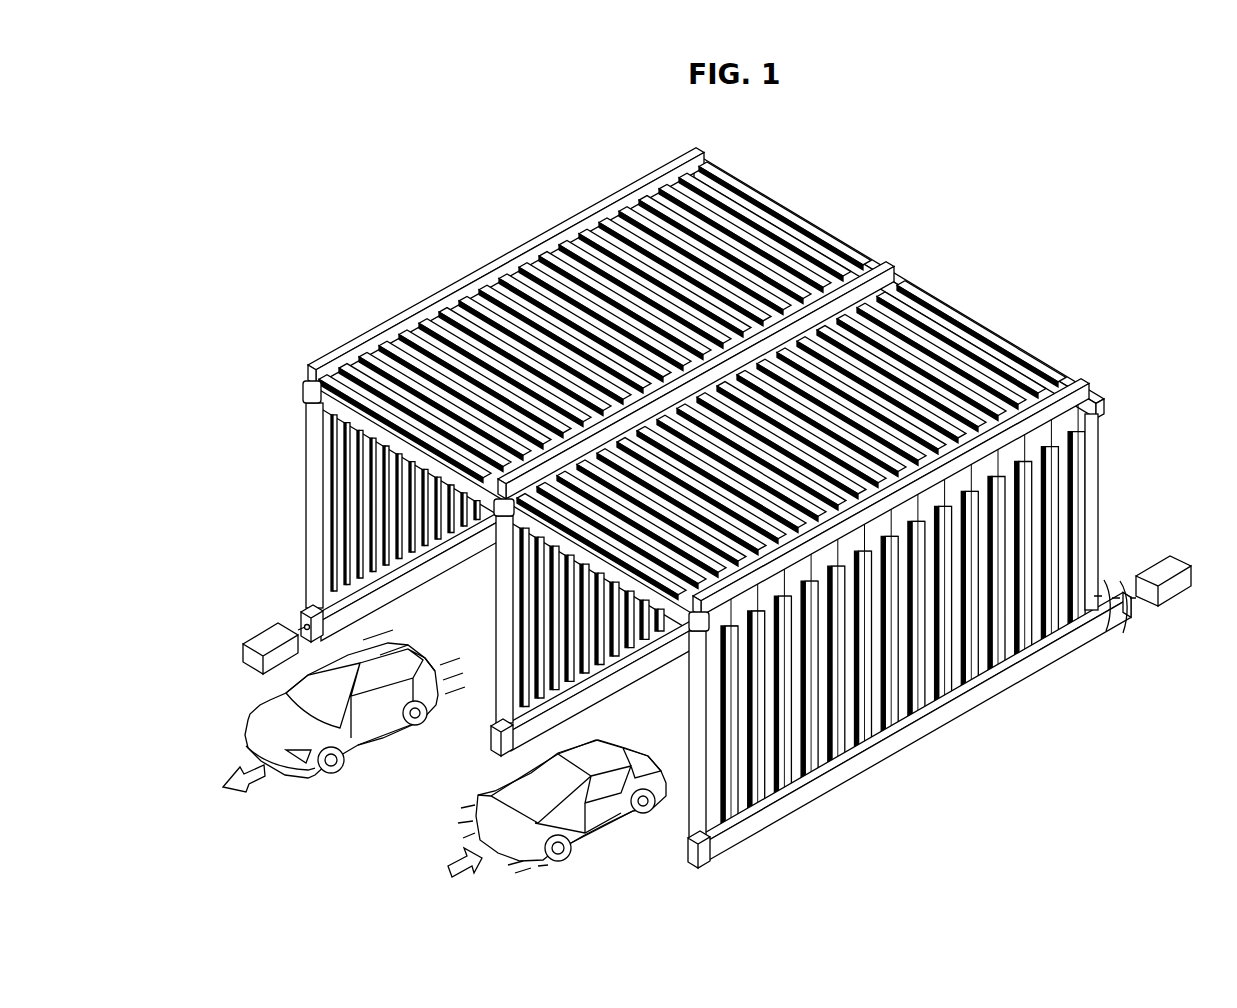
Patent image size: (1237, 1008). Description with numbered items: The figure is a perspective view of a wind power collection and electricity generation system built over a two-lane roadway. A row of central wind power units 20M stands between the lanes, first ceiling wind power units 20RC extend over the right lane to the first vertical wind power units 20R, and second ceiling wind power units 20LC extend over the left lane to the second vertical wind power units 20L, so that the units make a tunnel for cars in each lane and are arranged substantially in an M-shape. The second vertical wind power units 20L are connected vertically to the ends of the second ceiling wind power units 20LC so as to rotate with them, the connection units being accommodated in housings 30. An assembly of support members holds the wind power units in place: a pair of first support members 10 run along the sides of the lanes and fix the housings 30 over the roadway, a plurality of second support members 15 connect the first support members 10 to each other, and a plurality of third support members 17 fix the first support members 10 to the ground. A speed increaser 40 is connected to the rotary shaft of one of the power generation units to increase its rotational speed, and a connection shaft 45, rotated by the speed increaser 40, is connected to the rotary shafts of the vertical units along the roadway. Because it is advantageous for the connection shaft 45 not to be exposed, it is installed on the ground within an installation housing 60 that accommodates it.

The first support member 10 is at (363, 330).
The second support member 15 is at (453, 317).
The third support member 17 is at (822, 740).
The second vertical wind power unit 20L is at (300, 440).
The central wind power unit 20M is at (490, 602).
The first vertical wind power unit 20R is at (690, 735).
The second ceiling wind power unit 20LC is at (358, 385).
The first ceiling wind power unit 20RC is at (638, 580).
The housing 30 is at (300, 382).
The speed increaser 40 is at (262, 637).
The connection shaft 45 is at (296, 618).
The installation housing 60 is at (903, 732).